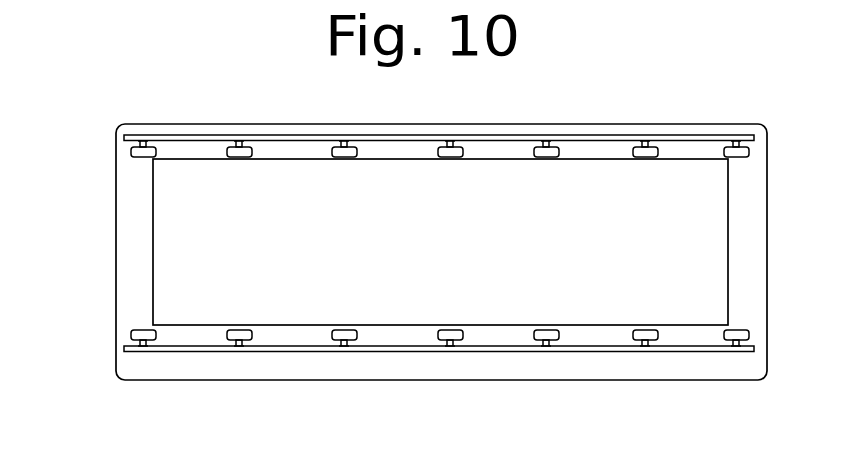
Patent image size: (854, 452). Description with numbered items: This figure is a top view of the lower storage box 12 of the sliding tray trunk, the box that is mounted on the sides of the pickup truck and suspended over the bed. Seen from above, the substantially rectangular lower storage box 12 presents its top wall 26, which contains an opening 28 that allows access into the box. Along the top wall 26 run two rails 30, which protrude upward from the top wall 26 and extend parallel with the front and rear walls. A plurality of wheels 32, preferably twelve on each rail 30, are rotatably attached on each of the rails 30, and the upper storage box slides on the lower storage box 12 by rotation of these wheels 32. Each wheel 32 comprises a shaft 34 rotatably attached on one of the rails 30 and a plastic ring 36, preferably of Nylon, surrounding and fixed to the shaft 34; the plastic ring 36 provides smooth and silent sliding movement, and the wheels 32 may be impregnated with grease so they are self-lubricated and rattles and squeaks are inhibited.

The lower storage box 12 is at (575, 109).
The top wall 26 is at (287, 363).
The opening 28 is at (168, 247).
The rail 30 is at (188, 134).
The wheel 32 is at (438, 146).
The shaft 34 is at (557, 339).
The plastic ring 36 is at (658, 332).